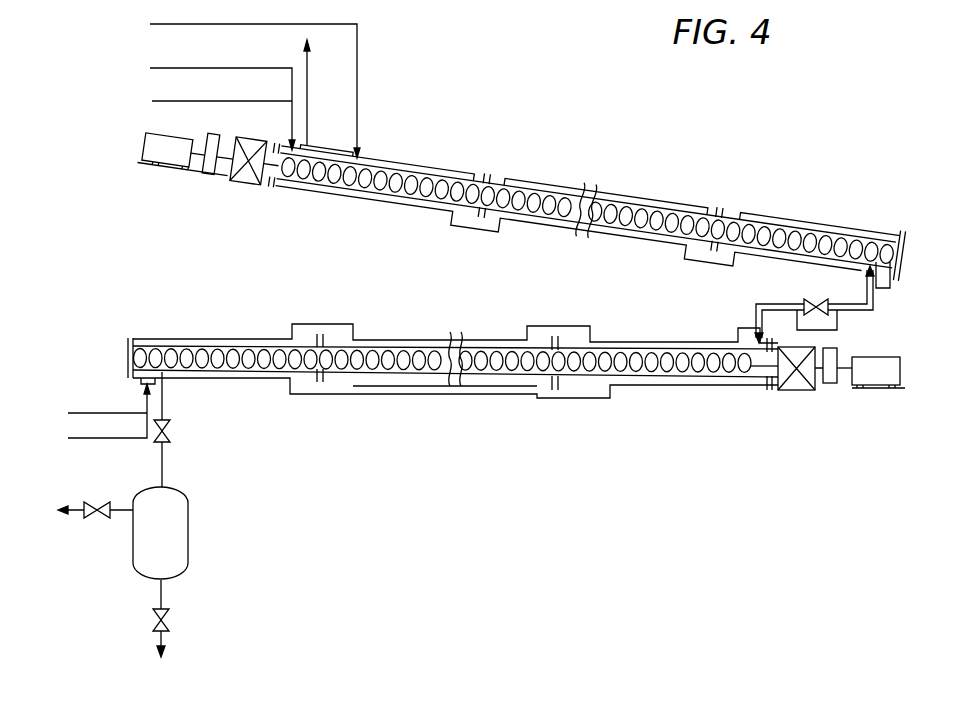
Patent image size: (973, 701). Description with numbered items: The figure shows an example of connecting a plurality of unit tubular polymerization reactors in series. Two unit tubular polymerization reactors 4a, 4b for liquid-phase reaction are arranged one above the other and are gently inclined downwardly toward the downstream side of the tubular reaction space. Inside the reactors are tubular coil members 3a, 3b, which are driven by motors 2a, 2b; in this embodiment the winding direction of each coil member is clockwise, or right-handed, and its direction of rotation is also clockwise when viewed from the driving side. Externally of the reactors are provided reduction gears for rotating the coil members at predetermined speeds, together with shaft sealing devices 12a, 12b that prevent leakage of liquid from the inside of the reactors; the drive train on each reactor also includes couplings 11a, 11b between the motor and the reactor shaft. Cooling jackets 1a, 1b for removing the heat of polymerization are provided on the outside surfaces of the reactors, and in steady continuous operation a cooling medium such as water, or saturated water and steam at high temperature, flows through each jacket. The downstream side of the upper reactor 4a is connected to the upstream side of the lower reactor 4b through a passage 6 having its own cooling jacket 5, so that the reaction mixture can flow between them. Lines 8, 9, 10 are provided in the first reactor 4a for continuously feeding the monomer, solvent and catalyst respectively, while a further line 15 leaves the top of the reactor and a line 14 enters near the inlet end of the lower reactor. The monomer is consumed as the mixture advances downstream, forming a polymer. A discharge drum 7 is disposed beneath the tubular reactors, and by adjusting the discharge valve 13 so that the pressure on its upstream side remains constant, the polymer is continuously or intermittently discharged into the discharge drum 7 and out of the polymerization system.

The cooling jacket 1a is at (705, 200).
The cooling jacket 1b is at (412, 388).
The motor 2a is at (162, 167).
The motor 2b is at (900, 370).
The tubular coil member 3a is at (710, 220).
The tubular coil member 3b is at (640, 367).
The tubular polymerization reactor 4a is at (608, 200).
The tubular polymerization reactor 4b is at (540, 385).
The cooling jacket 5 is at (838, 302).
The passage 6 is at (876, 304).
The discharge drum 7 is at (188, 535).
The line 8 is at (246, 86).
The line 9 is at (209, 101).
The line 10 is at (207, 105).
The upper conveyor coupling 11a is at (208, 176).
The lower conveyor coupling 11b is at (830, 383).
The shaft sealing device 12a is at (240, 182).
The shaft sealing device 12b is at (786, 390).
The discharge valve 13 is at (168, 425).
The gas inlet 14 is at (90, 412).
The vent line 15 is at (319, 93).